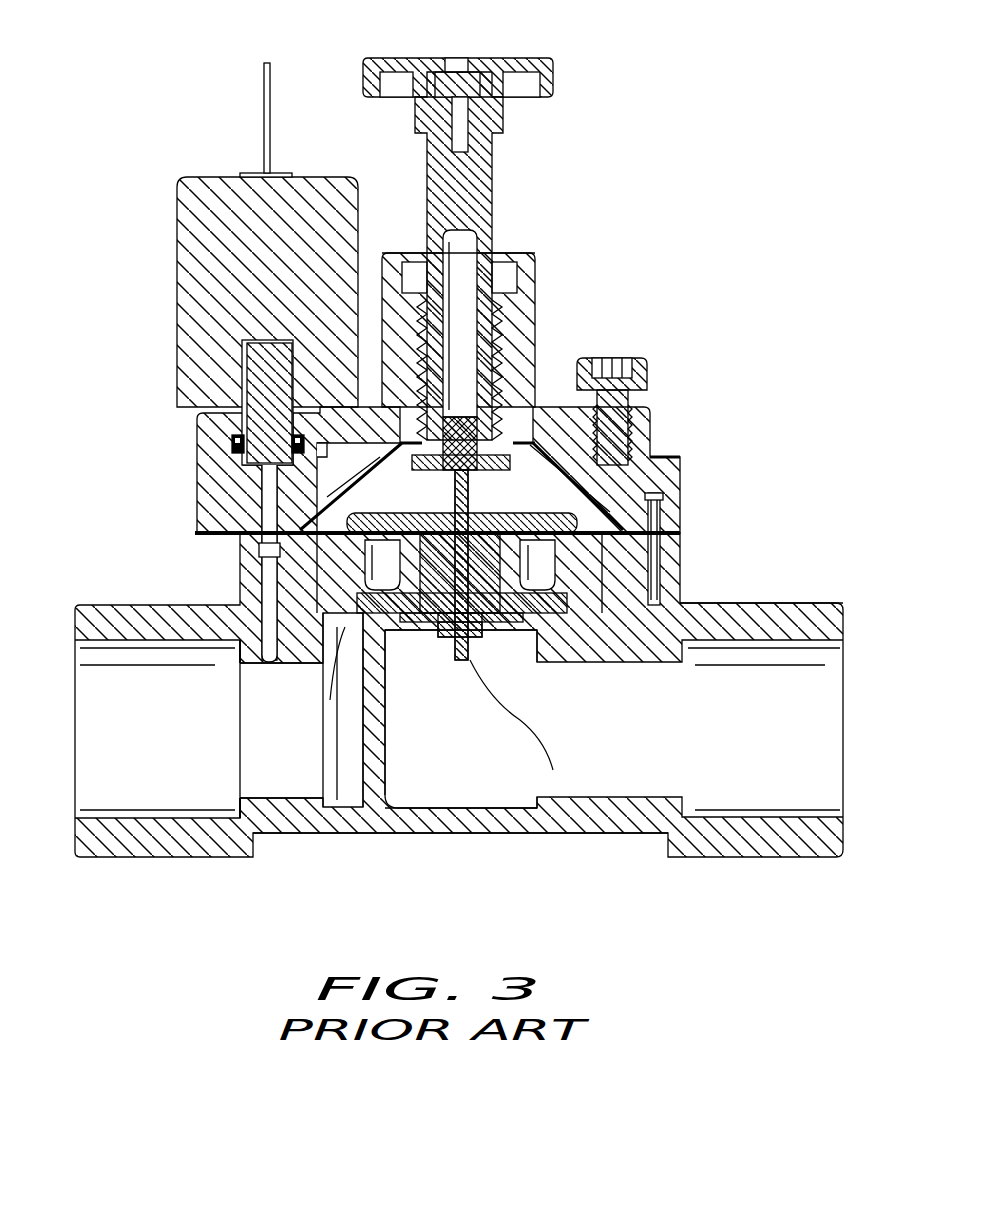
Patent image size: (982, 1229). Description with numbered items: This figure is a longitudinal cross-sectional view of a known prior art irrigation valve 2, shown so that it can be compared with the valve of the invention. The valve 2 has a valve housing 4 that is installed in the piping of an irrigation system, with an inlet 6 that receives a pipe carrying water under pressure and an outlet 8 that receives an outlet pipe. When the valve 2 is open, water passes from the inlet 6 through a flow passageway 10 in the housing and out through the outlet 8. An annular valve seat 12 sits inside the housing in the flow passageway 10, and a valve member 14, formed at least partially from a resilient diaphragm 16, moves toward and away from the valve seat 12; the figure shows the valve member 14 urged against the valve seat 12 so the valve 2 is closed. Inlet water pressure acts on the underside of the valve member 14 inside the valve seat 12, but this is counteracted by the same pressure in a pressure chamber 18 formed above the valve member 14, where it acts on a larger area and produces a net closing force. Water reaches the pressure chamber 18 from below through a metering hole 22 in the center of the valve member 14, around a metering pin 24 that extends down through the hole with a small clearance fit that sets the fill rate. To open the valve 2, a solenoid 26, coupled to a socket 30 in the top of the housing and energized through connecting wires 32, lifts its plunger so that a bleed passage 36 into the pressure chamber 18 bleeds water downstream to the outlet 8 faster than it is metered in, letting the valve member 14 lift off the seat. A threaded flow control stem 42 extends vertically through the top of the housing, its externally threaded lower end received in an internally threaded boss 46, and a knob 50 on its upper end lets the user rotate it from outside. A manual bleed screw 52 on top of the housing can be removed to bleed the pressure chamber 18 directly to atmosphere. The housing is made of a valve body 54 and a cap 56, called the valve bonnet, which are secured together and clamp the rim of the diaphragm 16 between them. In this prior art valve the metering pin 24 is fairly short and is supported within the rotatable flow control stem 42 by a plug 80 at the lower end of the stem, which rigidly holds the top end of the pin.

The irrigation valve 2 is at (678, 205).
The valve housing 4 is at (550, 256).
The inlet 6 is at (818, 603).
The outlet 8 is at (100, 605).
The flow passageway 10 is at (625, 742).
The annular valve seat 12 is at (367, 627).
The valve member 14 is at (435, 645).
The resilient diaphragm 16 is at (652, 497).
The pressure chamber 18 is at (540, 503).
The metering hole 22 is at (463, 648).
The metering pin 24 is at (467, 637).
The solenoid 26 is at (177, 258).
The socket 30 is at (197, 462).
The connecting wires 32 is at (264, 72).
The bleed passage 36 is at (262, 508).
The flow control stem 42 is at (492, 172).
The internally threaded boss 46 is at (523, 303).
The knob 50 is at (553, 62).
The manual bleed screw 52 is at (640, 358).
The valve body 54 is at (703, 603).
The cap 56 is at (647, 410).
The plug 80 is at (462, 415).